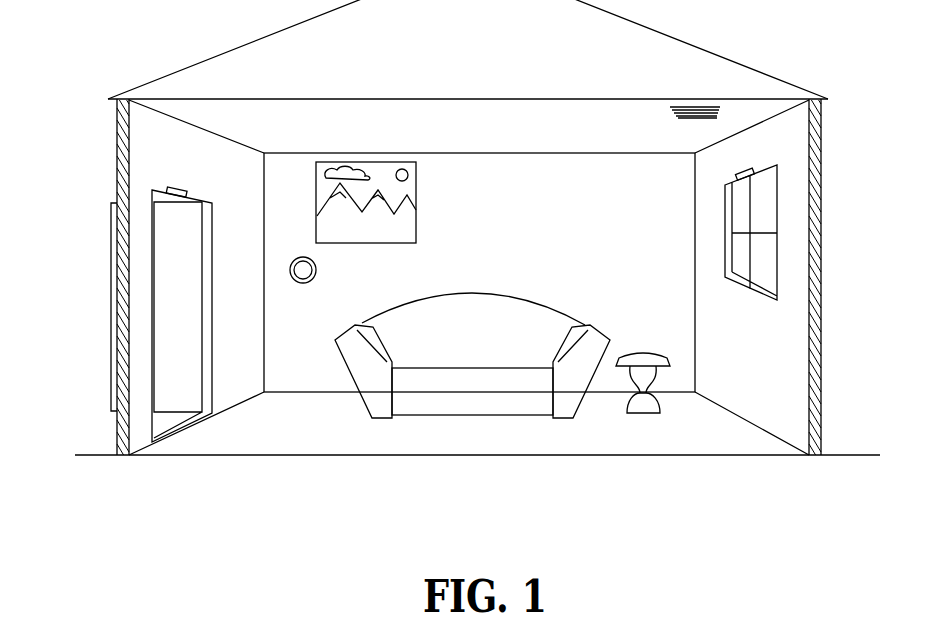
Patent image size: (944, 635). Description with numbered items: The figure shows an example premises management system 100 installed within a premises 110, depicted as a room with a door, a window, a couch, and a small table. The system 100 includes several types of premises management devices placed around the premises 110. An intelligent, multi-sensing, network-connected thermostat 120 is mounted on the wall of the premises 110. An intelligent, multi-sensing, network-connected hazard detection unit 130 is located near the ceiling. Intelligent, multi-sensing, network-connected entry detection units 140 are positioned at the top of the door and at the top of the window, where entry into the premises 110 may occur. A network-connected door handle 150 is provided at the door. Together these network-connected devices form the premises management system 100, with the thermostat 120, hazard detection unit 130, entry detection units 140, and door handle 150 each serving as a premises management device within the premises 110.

The premises management system 100 is at (495, 531).
The premises 110 is at (487, 243).
The thermostat 120 is at (290, 271).
The hazard detection unit 130 is at (676, 113).
The entry detection unit 140 is at (178, 188).
The door handle 150 is at (110, 303).